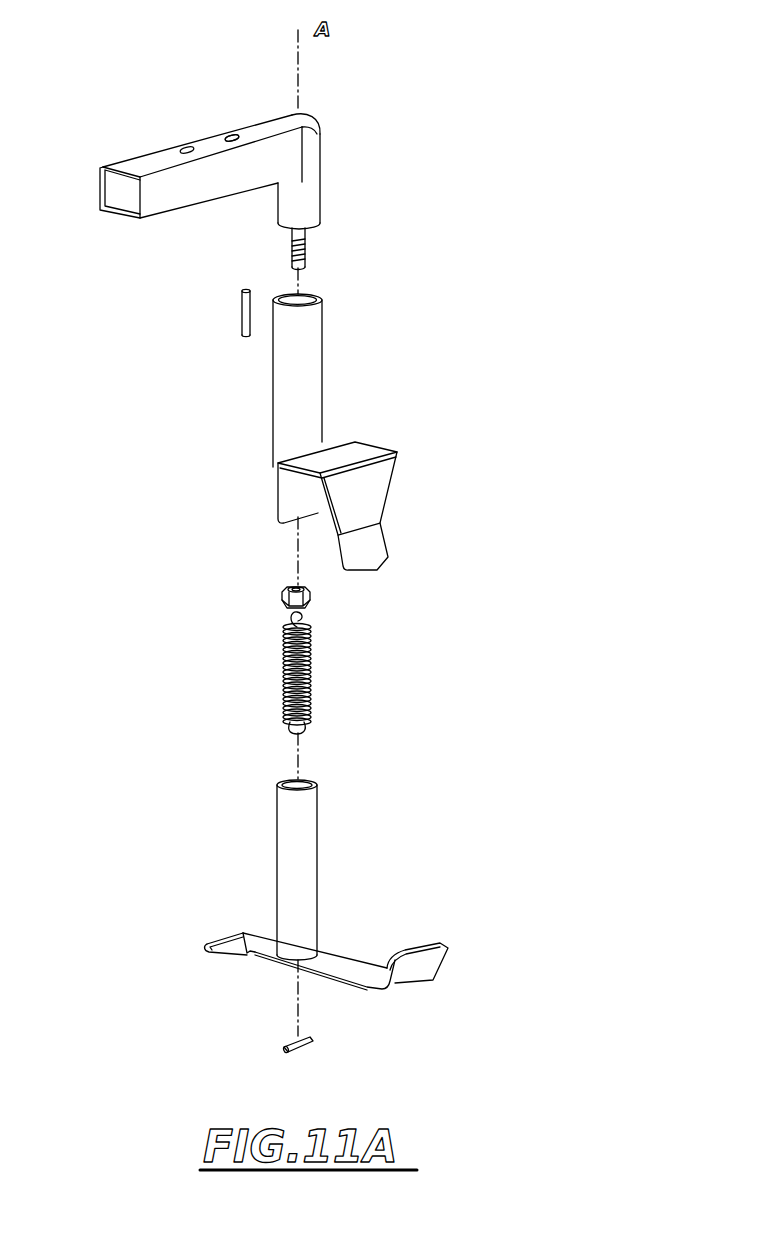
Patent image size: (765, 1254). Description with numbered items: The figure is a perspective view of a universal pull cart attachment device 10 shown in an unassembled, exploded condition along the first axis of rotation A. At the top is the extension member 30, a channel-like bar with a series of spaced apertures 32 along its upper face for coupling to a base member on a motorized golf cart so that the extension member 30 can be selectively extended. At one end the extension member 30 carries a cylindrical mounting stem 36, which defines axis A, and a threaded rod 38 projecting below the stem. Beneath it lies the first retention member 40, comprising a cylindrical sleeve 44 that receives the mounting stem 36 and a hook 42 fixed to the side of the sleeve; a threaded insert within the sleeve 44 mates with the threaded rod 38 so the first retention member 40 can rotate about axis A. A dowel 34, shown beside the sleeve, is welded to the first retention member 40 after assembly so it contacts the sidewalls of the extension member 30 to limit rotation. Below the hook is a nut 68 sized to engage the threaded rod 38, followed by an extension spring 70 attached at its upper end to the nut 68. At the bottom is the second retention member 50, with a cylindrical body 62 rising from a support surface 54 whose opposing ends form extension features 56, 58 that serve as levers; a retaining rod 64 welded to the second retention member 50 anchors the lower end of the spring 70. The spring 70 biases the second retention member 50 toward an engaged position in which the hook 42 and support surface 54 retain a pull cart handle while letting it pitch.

The attachment device 10 is at (560, 172).
The extension member 30 is at (131, 114).
The spaced apertures 32 is at (231, 134).
The dowel 34 is at (240, 313).
The cylindrical mounting stem 36 is at (310, 197).
The threaded rod 38 is at (300, 243).
The first retention member 40 is at (388, 374).
The hook 42 is at (388, 467).
The cylindrical sleeve 44 is at (310, 330).
The second retention member 50 is at (200, 877).
The support surface 54 is at (350, 966).
The extension feature 56 is at (220, 953).
The extension feature 58 is at (436, 962).
The cylindrical body 62 is at (318, 840).
The retaining rod 64 is at (313, 1041).
The nut 68 is at (282, 597).
The extension spring 70 is at (312, 668).